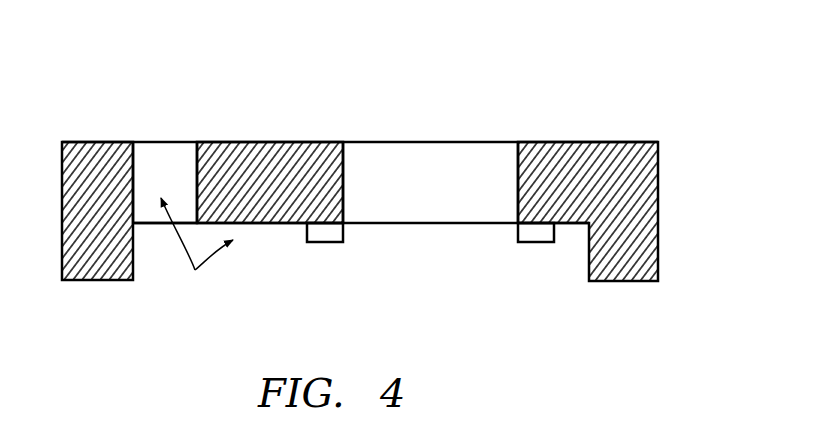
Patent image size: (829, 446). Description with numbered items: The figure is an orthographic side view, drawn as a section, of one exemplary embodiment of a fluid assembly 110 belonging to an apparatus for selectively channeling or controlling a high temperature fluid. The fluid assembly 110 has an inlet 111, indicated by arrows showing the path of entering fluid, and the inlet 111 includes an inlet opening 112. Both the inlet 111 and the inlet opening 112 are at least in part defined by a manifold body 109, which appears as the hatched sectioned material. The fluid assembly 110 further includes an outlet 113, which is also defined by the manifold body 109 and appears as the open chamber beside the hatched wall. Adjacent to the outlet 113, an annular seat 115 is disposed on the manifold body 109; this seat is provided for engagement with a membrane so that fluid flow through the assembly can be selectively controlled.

The fluid assembly 110 is at (382, 173).
The inlet opening 112 is at (162, 141).
The manifold body 109 is at (301, 141).
The outlet 113 is at (449, 198).
The annular seat 115 is at (322, 243).
The inlet 111 is at (195, 270).